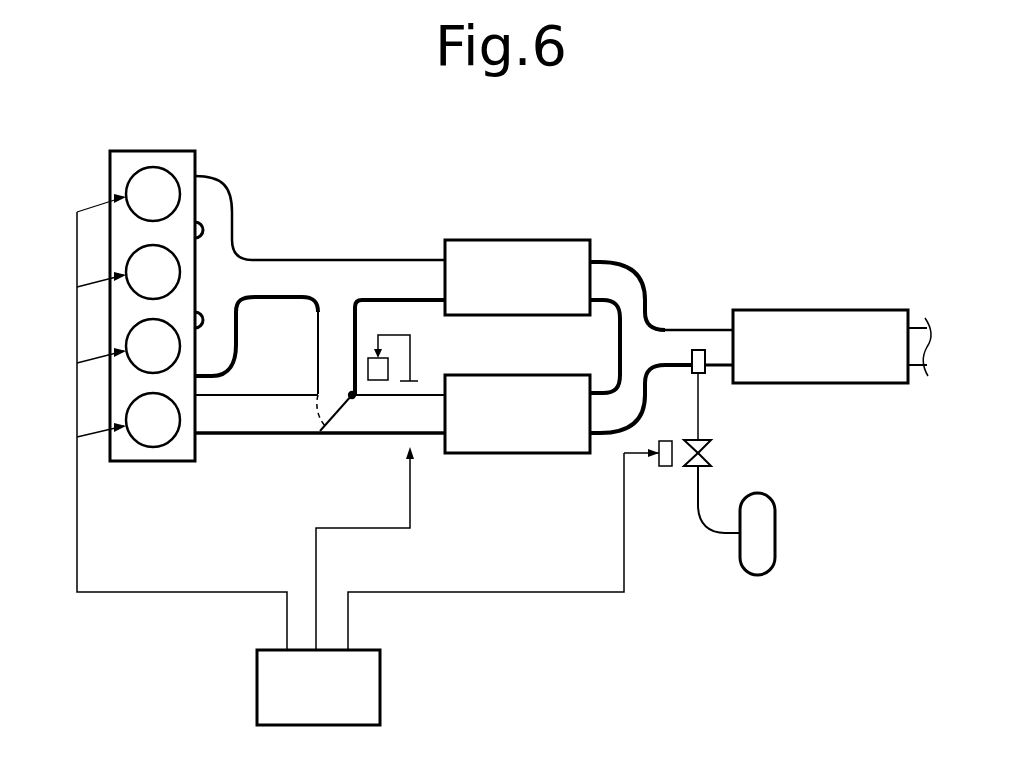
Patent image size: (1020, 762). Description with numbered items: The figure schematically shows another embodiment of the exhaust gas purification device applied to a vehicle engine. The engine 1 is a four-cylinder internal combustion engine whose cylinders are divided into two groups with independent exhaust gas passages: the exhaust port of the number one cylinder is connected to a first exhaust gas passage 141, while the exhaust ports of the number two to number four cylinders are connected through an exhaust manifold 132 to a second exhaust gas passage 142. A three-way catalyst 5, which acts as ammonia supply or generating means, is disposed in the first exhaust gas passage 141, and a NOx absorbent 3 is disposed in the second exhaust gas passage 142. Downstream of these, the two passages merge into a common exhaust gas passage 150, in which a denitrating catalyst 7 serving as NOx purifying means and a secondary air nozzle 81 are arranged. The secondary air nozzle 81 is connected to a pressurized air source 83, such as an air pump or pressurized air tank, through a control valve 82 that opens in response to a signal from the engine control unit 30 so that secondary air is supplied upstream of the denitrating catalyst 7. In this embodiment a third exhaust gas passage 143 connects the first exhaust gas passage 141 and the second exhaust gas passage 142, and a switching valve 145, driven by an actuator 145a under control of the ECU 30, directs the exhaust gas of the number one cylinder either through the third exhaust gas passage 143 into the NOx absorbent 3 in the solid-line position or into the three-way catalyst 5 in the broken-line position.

The multiple-cylinder type internal combustion engine 1 is at (155, 151).
The NOx absorbent 3 is at (532, 240).
The three-way catalyst 5 is at (529, 455).
The denitrating catalyst 7 is at (812, 310).
The engine control unit (ECU) 30 is at (380, 688).
The secondary air nozzle 81 is at (705, 376).
The control valve 82 is at (712, 452).
The pressurized air source 83 is at (775, 515).
The exhaust manifold 132 is at (228, 200).
The first exhaust gas passage 141 is at (262, 427).
The second exhaust gas passage 142 is at (358, 262).
The third exhaust gas passage 143 is at (318, 337).
The switching valve 145 is at (336, 422).
The actuator 145a is at (388, 368).
The common exhaust gas passage 150 is at (727, 340).